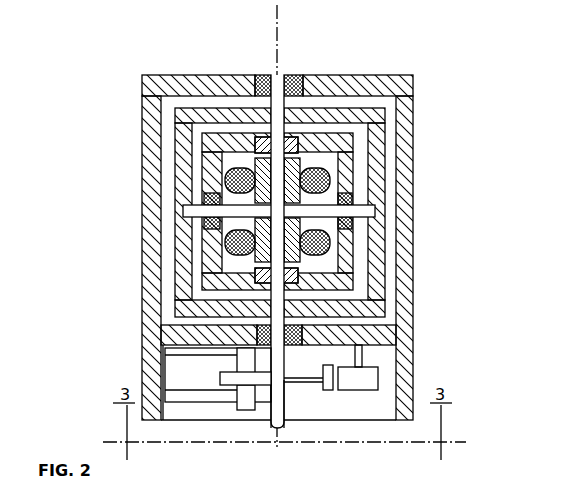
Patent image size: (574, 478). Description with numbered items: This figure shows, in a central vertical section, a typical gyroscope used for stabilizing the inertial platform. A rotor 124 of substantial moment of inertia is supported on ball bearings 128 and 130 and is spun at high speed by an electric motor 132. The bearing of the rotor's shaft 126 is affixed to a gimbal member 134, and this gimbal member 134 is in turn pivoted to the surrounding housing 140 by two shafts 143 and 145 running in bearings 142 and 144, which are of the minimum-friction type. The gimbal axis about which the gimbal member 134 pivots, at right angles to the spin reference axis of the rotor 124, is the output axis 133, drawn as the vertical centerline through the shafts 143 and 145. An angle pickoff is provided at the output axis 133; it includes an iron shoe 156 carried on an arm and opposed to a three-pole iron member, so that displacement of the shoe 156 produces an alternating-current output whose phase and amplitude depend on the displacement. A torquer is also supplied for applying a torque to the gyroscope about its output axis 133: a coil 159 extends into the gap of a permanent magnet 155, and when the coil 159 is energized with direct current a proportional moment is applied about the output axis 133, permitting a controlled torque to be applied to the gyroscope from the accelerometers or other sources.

The rotor 124 is at (343, 152).
The shaft 126 is at (370, 207).
The ball bearing 128 is at (349, 211).
The ball bearing 130 is at (203, 185).
The electric motor 132 is at (298, 158).
The output axis 133 is at (278, 46).
The gimbal member 134 is at (372, 250).
The housing 140 is at (301, 239).
The bearing 142 is at (300, 78).
The shaft 143 is at (284, 75).
The bearing 144 is at (289, 344).
The shaft 145 is at (281, 387).
The permanent magnet 155 is at (217, 379).
The iron shoe 156 is at (328, 388).
The coil 159 is at (268, 380).